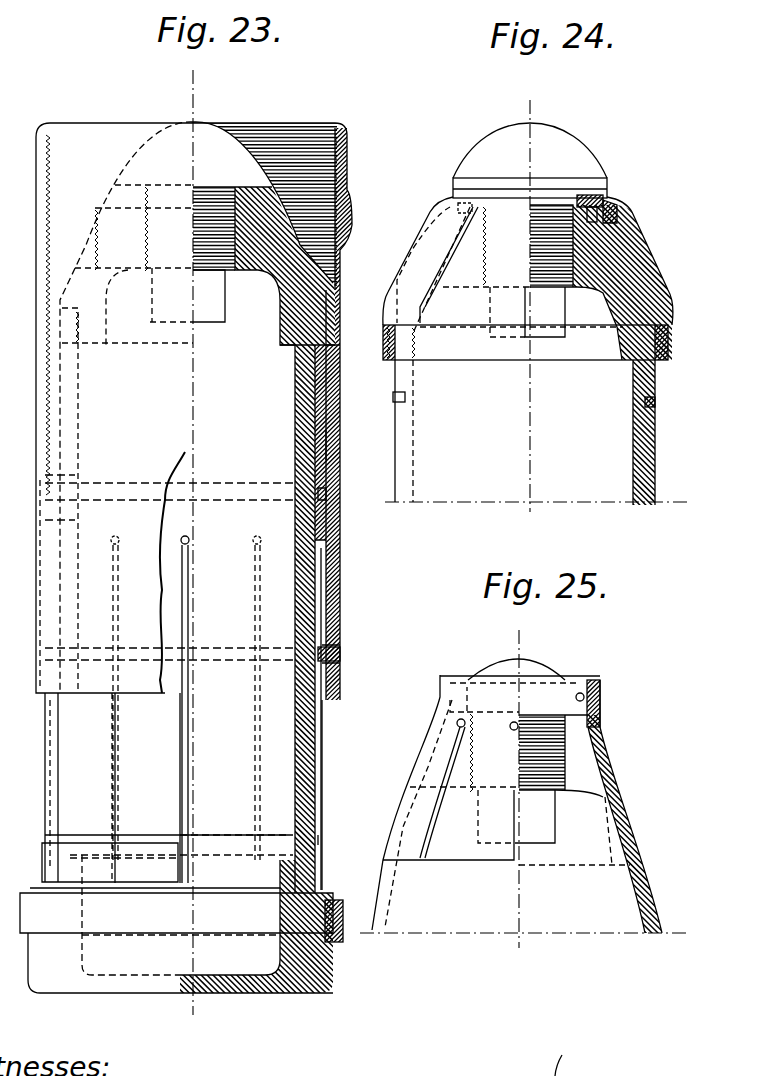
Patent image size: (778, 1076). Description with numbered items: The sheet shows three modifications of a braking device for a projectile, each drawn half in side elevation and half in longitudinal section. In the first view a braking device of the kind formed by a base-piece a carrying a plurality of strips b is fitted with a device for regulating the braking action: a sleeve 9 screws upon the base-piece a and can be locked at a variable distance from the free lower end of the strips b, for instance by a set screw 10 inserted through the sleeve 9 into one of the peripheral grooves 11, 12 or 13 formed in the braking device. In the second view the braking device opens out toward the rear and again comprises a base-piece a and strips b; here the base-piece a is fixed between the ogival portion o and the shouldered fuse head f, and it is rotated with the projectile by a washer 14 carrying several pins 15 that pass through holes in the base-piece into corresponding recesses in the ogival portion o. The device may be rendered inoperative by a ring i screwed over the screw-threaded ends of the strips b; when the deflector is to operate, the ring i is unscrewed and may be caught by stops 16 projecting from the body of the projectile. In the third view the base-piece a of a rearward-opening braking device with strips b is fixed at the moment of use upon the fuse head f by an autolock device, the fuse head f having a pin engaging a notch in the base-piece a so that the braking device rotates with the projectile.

In FIG. 23, the base-piece a is at (338, 258).
In FIG. 24, the base-piece a is at (618, 211).
In FIG. 25, the base-piece a is at (600, 698).
In FIG. 23, the strips b is at (85, 739).
In FIG. 24, the strips b is at (465, 245).
In FIG. 25, the strips b is at (440, 813).
In FIG. 23, the ogival portion o is at (265, 218).
In FIG. 24, the ogival portion o is at (625, 262).
In FIG. 25, the ogival portion o is at (625, 828).
In FIG. 24, the fuse head f is at (578, 170).
In FIG. 25, the fuse head f is at (555, 700).
In FIG. 24, the ring i is at (392, 350).
In FIG. 23, the sleeve 9 is at (338, 448).
In FIG. 23, the set screw 10 is at (340, 661).
In FIG. 23, the peripheral groove 11 is at (78, 840).
In FIG. 23, the peripheral groove 12 is at (340, 654).
In FIG. 23, the peripheral groove 13 is at (335, 496).
In FIG. 24, the washer 14 is at (607, 199).
In FIG. 24, the pins 15 is at (620, 222).
In FIG. 24, the stops 16 is at (393, 397).